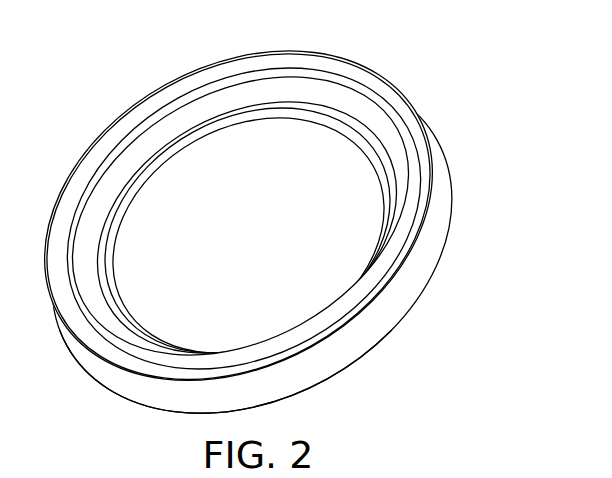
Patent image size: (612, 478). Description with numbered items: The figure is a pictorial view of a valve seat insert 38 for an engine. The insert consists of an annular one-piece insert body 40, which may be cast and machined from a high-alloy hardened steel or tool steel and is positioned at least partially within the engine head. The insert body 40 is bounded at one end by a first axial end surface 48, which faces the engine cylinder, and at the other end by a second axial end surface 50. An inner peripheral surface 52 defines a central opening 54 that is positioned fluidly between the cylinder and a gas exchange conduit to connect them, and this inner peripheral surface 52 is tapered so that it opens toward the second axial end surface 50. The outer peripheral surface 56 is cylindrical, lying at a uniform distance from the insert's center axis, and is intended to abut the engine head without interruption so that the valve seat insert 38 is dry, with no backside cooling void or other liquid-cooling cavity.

The valve seat insert 38 is at (264, 239).
The insert body 40 is at (256, 239).
The first axial end surface 48 is at (350, 369).
The second axial end surface 50 is at (213, 70).
The inner peripheral surface 52 is at (247, 227).
The opening 54 is at (244, 230).
The outer peripheral surface 56 is at (432, 229).